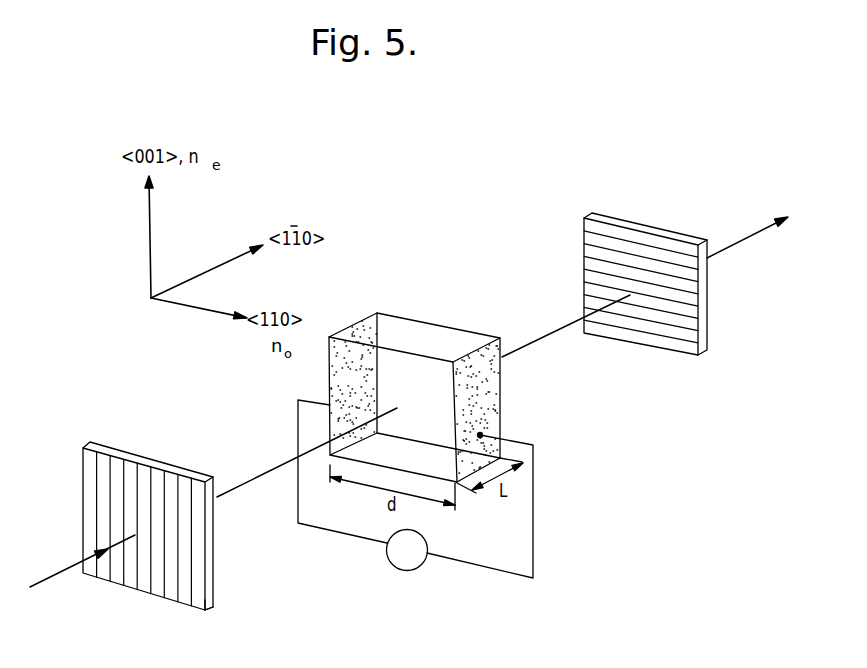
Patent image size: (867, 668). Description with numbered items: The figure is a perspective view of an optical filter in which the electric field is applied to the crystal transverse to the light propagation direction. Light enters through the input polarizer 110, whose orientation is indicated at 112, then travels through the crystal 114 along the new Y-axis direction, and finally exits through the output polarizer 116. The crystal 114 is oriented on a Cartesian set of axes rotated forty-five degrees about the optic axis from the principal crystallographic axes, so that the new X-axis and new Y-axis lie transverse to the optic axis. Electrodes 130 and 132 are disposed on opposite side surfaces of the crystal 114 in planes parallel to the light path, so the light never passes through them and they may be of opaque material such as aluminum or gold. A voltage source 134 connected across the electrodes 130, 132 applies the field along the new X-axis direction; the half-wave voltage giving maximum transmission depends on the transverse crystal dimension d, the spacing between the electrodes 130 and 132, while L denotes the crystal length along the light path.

The input polarizer 110 is at (70, 569).
The polarizer polarization direction 112 is at (200, 604).
The crystal 114 is at (408, 423).
The output polarizer 116 is at (642, 223).
The electrode 130 is at (330, 385).
The electrode 132 is at (490, 417).
The voltage source 134 is at (408, 571).